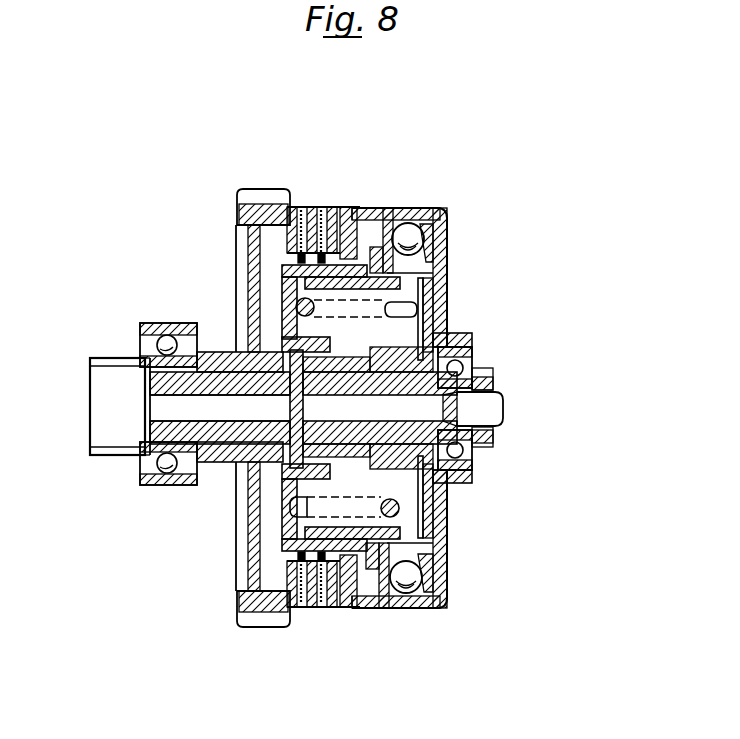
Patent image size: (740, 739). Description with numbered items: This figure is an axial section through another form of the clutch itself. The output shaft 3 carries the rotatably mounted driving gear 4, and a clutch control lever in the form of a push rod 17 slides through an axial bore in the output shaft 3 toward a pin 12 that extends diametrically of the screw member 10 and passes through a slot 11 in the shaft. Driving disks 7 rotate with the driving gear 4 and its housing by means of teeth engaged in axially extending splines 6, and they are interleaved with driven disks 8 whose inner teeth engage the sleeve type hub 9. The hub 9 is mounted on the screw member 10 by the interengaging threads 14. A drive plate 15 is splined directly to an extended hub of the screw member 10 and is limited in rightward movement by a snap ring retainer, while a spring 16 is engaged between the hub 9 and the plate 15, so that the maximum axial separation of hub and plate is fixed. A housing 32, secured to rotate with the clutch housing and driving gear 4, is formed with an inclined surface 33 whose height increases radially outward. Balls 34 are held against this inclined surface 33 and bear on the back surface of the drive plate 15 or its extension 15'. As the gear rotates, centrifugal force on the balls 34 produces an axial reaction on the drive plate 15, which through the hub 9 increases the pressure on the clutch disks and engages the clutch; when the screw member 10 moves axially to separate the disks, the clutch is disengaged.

The output shaft 3 is at (115, 400).
The driving gear 4 is at (253, 215).
The splines 6 is at (357, 208).
The driving disks 7 is at (323, 208).
The driven disks 8 is at (318, 607).
The hub 9 is at (285, 282).
The screw member 10 is at (333, 452).
The slot 11 is at (315, 408).
The pin 12 is at (263, 342).
The threads 14 is at (280, 502).
The drive plate 15 is at (487, 319).
The extension of drive plate 15' is at (407, 552).
The spring 16 is at (405, 309).
The push rod 17 is at (152, 443).
The housing 32 is at (447, 218).
The inclined surface 33 is at (448, 257).
The balls 34 is at (406, 233).